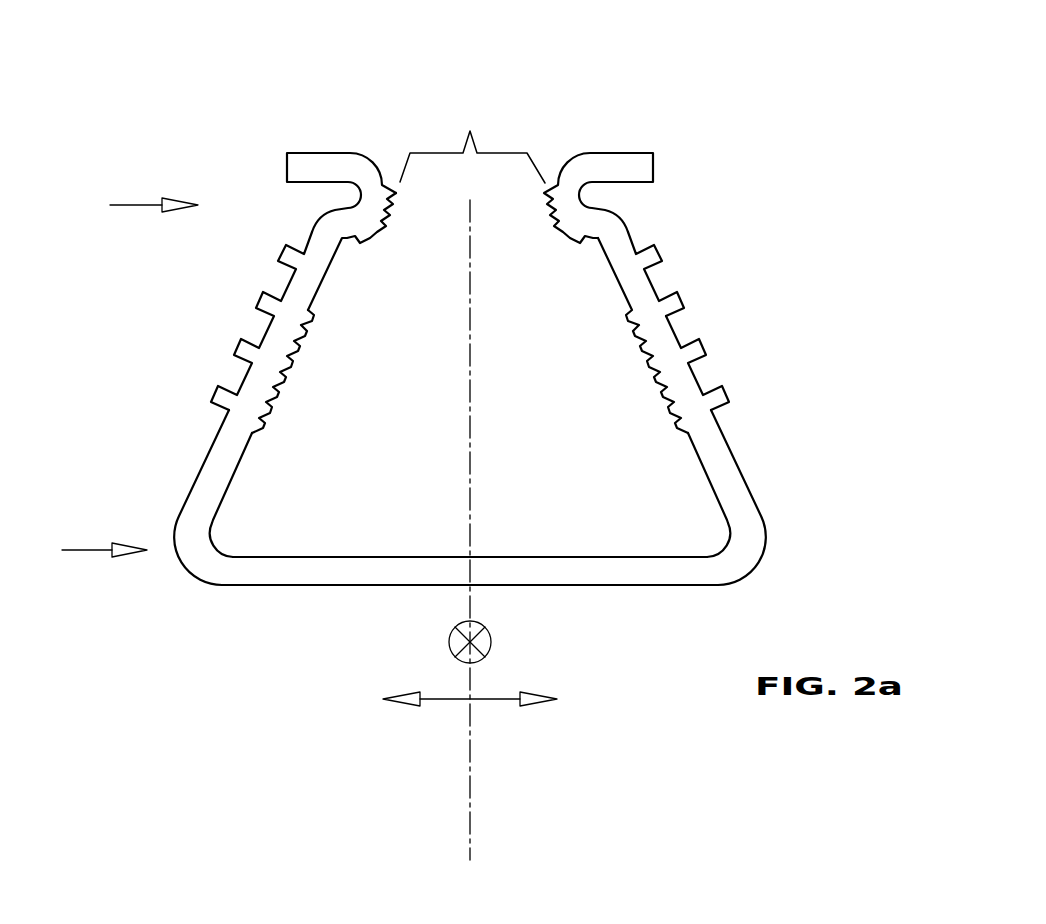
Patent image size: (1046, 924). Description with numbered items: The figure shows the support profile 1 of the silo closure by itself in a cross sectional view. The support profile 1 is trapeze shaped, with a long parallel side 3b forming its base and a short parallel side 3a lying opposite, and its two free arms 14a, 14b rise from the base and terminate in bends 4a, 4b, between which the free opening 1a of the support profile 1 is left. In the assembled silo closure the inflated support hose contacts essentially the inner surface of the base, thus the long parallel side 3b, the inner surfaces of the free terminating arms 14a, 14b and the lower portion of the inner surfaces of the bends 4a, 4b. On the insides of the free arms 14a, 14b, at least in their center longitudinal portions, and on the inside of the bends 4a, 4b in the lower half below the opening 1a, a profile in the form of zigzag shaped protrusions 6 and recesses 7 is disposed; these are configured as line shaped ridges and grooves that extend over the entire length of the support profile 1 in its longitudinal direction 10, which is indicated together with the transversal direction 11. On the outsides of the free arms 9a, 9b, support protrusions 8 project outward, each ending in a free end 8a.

The support profile 1 is at (222, 653).
The opening 1a is at (472, 142).
The parallel side 3a is at (138, 204).
The parallel side 3b is at (87, 550).
The bend 4a is at (375, 180).
The bend 4b is at (565, 180).
The support profile protrusion 6 is at (308, 317).
The support profile recess 7 is at (293, 355).
The support protrusion 8 is at (727, 387).
The free end 8a is at (680, 298).
The outside of the free arm 9a is at (200, 470).
The outside of the free arm 9b is at (733, 452).
The longitudinal direction 10 is at (468, 642).
The transversal direction 11 is at (477, 699).
The free arm 14a is at (205, 492).
The free arm 14b is at (727, 482).